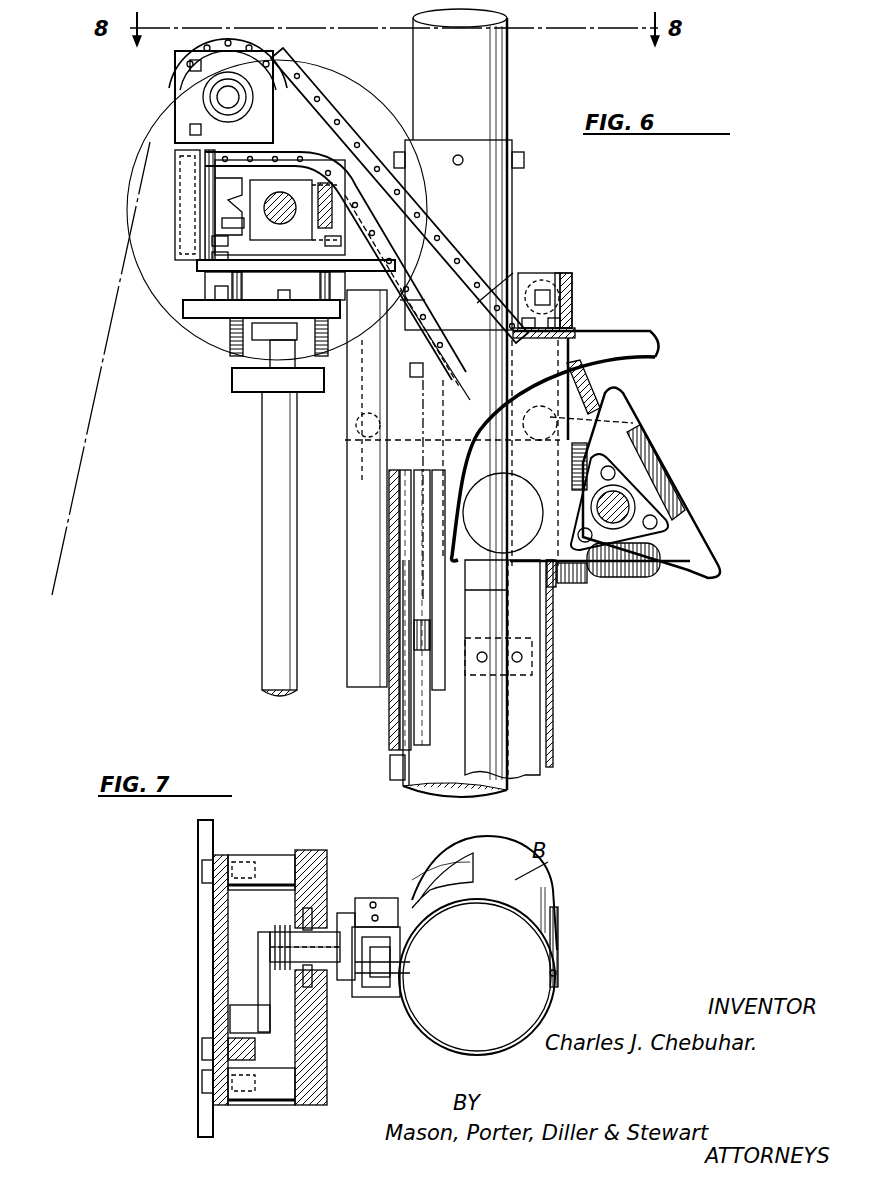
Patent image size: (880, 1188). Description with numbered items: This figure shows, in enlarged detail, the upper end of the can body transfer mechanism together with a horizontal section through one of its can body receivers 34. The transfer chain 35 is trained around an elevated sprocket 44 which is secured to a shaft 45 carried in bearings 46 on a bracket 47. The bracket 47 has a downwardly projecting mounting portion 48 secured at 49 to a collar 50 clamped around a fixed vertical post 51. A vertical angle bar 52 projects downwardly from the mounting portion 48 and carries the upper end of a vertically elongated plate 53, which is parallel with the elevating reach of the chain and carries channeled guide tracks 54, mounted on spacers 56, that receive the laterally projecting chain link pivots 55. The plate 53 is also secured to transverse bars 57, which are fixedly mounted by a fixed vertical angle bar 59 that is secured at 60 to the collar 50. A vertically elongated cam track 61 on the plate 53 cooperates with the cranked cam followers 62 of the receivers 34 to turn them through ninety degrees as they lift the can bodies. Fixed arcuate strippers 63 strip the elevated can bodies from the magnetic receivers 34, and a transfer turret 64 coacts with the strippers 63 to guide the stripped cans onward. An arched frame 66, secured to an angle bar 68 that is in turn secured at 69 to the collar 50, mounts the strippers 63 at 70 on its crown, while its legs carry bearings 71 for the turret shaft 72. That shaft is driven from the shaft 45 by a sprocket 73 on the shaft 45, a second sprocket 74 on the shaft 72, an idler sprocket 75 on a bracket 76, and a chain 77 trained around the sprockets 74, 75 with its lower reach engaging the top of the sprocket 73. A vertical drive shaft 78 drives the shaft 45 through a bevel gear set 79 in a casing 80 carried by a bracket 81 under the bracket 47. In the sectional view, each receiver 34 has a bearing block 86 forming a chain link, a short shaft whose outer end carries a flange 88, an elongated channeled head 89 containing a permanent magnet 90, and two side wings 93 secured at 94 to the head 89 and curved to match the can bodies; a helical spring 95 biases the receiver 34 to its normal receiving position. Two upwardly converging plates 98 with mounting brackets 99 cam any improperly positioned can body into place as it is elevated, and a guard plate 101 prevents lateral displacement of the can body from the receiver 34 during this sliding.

In FIG. 6, the transfer chain 35 is at (95, 379).
In FIG. 7, the transfer chain 35 is at (300, 952).
In FIG. 6, the elevated sprocket 44 is at (173, 118).
In FIG. 6, the shaft 45 is at (263, 210).
In FIG. 6, the bearings 46 is at (222, 223).
In FIG. 6, the bracket 47 is at (196, 270).
In FIG. 6, the mounting portion 48 is at (395, 280).
In FIG. 6, the securing point 49 is at (400, 300).
In FIG. 6, the collar 50 is at (483, 293).
In FIG. 6, the fixed vertical post 51 is at (510, 132).
In FIG. 6, the vertical angle bar 52 is at (355, 512).
In FIG. 6, the vertically elongated plate 53 is at (398, 645).
In FIG. 7, the vertically elongated plate 53 is at (218, 927).
In FIG. 6, the channeled guide tracks 54 is at (428, 647).
In FIG. 7, the channeled guide tracks 54 is at (320, 855).
In FIG. 7, the chain link pivots 55 is at (305, 915).
In FIG. 6, the spacers 56 is at (392, 545).
In FIG. 7, the spacers 56 is at (262, 858).
In FIG. 7, the transverse bars 57 is at (200, 840).
In FIG. 6, the fixed vertical angle bar 59 is at (435, 370).
In FIG. 6, the securing point 60 is at (445, 343).
In FIG. 6, the cam track 61 is at (392, 712).
In FIG. 7, the cam track 61 is at (232, 1048).
In FIG. 7, the cranked cam follower 62 is at (245, 1003).
In FIG. 6, the arcuate strippers 63 is at (600, 340).
In FIG. 6, the transfer turret 64 is at (697, 528).
In FIG. 6, the arched frame 66 is at (578, 285).
In FIG. 6, the angle bar 68 is at (553, 278).
In FIG. 6, the securing point 69 is at (548, 292).
In FIG. 6, the securing point 70 is at (540, 330).
In FIG. 6, the bearings 71 is at (640, 577).
In FIG. 6, the turret shaft 72 is at (660, 495).
In FIG. 6, the sprocket 73 is at (215, 185).
In FIG. 6, the second sprocket 74 is at (640, 462).
In FIG. 6, the idler sprocket 75 is at (303, 80).
In FIG. 6, the bracket 76 is at (184, 162).
In FIG. 6, the chain 77 is at (350, 195).
In FIG. 6, the vertical drive shaft 78 is at (262, 590).
In FIG. 6, the bevel gear set 79 is at (225, 262).
In FIG. 6, the casing 80 is at (346, 94).
In FIG. 6, the bracket 81 is at (212, 318).
In FIG. 7, the bearing blocks 86 is at (290, 948).
In FIG. 7, the flange 88 is at (343, 912).
In FIG. 7, the channeled head 89 is at (405, 958).
In FIG. 7, the permanent magnet 90 is at (403, 971).
In FIG. 7, the side wings 93 is at (445, 862).
In FIG. 7, the securing point 94 is at (376, 916).
In FIG. 7, the helical spring 95 is at (278, 924).
In FIG. 6, the upwardly converging plates 98 is at (530, 733).
In FIG. 6, the mounting brackets 99 is at (468, 670).
In FIG. 6, the guard plate 101 is at (553, 678).
In FIG. 7, the can body receiver 34 is at (415, 874).
In FIG. 7, the clamp S is at (560, 960).